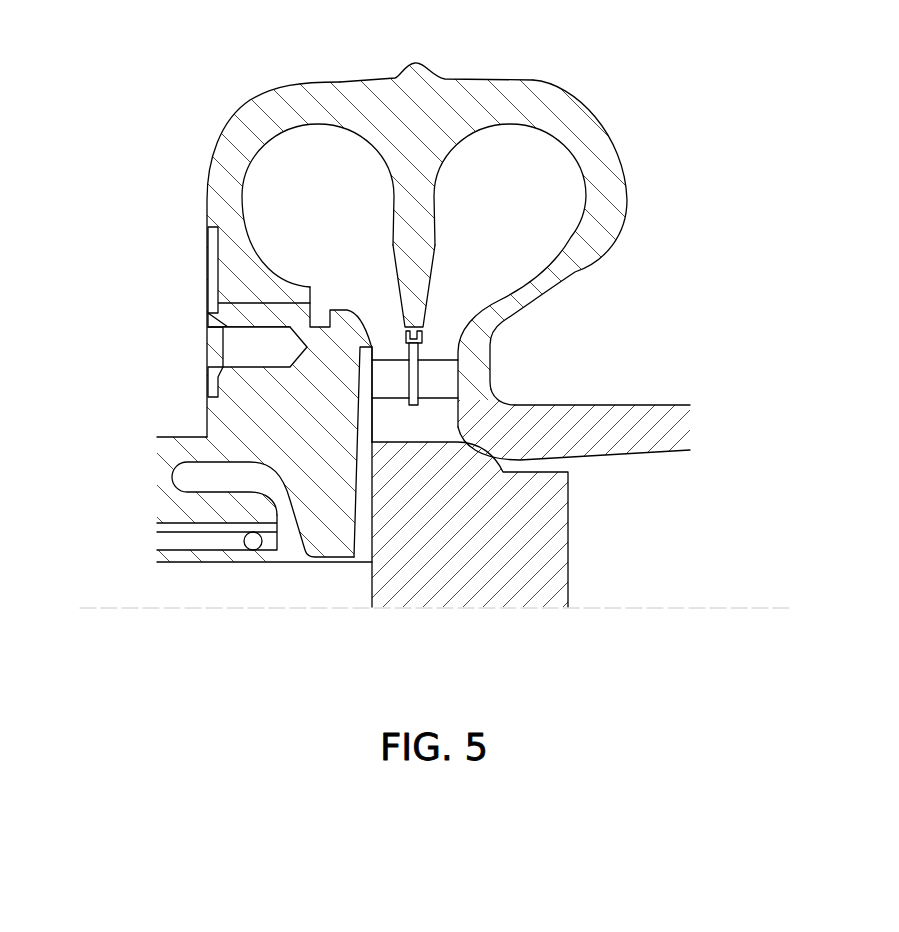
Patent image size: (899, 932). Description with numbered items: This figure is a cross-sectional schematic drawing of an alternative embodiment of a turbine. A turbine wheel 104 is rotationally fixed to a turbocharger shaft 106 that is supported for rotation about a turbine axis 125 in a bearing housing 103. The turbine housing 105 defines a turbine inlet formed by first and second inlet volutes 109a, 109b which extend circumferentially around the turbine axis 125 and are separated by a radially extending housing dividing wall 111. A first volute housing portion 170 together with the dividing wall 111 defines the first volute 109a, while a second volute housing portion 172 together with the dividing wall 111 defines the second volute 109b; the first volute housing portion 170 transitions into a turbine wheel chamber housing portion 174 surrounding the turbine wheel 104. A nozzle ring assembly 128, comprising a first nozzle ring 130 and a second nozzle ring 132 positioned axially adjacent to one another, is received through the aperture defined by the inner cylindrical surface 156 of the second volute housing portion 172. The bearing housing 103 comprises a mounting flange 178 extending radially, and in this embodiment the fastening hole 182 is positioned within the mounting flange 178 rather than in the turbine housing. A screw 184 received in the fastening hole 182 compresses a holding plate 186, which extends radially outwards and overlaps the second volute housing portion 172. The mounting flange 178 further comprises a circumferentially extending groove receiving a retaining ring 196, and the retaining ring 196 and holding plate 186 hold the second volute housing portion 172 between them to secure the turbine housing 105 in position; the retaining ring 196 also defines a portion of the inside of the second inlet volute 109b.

The bearing housing 103 is at (182, 452).
The turbine wheel 104 is at (477, 555).
The turbine housing 105 is at (368, 108).
The turbocharger shaft 106 is at (232, 583).
The first inlet volute 109a is at (518, 167).
The second inlet volute 109b is at (285, 158).
The housing dividing wall 111 is at (417, 214).
The turbine axis 125 is at (663, 606).
The nozzle ring assembly 128 is at (440, 330).
The first nozzle ring 130 is at (440, 383).
The second nozzle ring 132 is at (395, 392).
The inner cylindrical surface 156 is at (280, 303).
The first volute housing portion 170 is at (600, 188).
The second volute housing portion 172 is at (232, 153).
The turbine wheel chamber housing portion 174 is at (483, 422).
The bearing housing mounting flange 178 is at (268, 390).
The fastening hole 182 is at (232, 305).
The screw 184 is at (224, 342).
The holding plate 186 is at (213, 250).
The retaining ring 196 is at (327, 302).